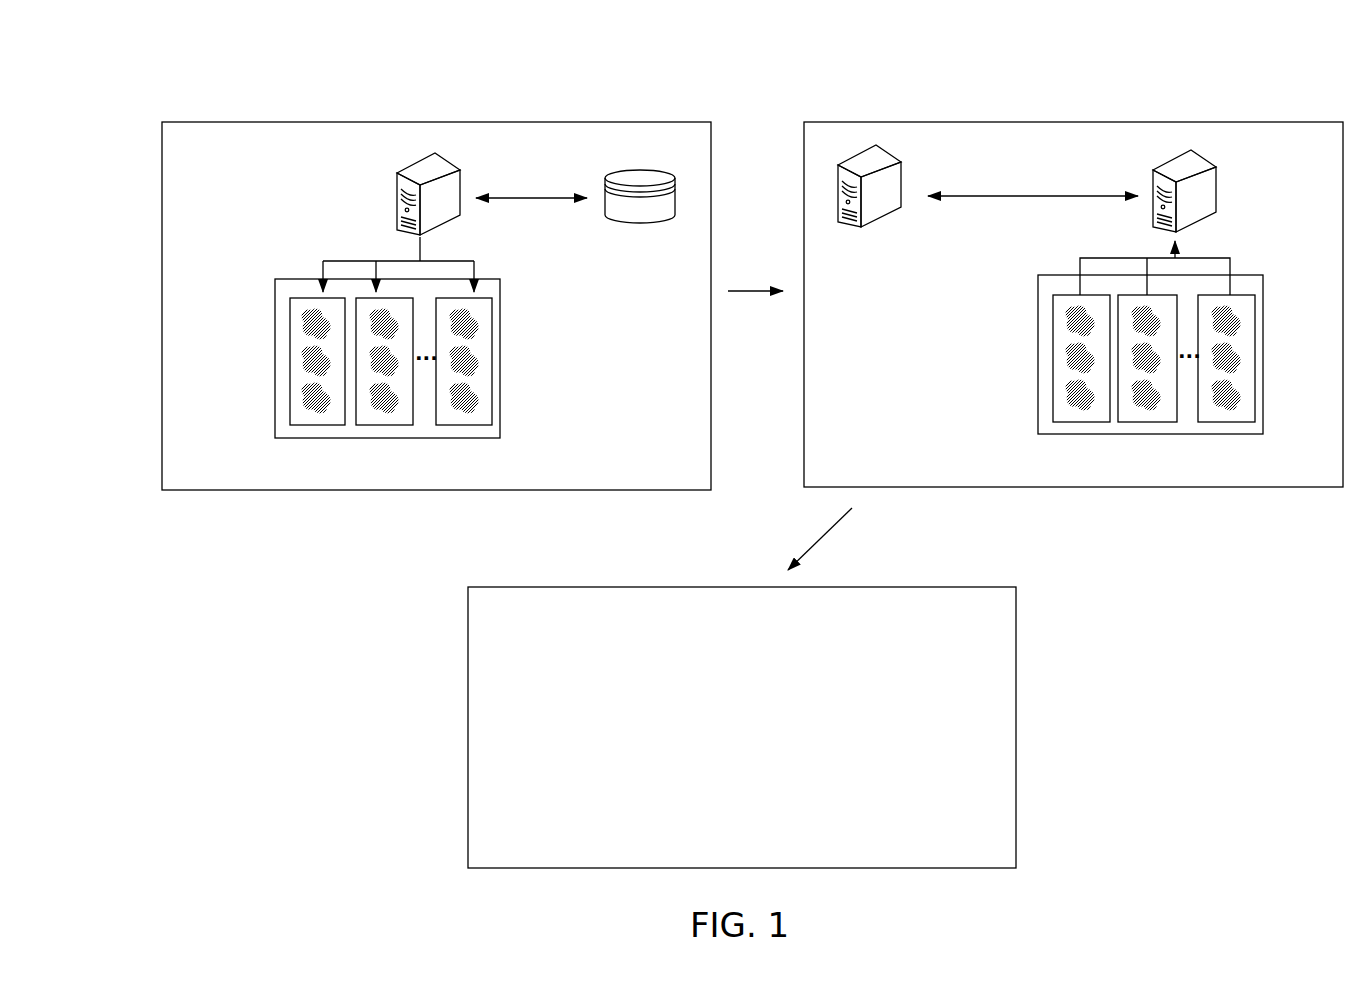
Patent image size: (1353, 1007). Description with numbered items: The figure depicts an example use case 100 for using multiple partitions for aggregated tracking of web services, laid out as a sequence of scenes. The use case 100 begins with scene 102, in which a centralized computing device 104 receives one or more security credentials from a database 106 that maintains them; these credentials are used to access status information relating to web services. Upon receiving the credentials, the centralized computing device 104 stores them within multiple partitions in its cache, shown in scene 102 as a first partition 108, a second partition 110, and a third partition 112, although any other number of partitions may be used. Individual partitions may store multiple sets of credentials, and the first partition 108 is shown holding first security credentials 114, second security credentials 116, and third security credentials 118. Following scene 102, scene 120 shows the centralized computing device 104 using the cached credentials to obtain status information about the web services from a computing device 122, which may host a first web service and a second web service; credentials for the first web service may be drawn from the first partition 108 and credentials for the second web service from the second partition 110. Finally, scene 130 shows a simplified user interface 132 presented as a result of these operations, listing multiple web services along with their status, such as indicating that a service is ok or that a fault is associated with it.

The use case 100 is at (245, 50).
The scene 102 is at (250, 121).
The centralized computing device 104 is at (397, 187).
The database 106 is at (612, 172).
The first partition 108 is at (290, 296).
The second partition 110 is at (378, 428).
The third partition 112 is at (497, 310).
The first security credentials 114 is at (300, 330).
The second security credentials 116 is at (298, 365).
The third security credentials 118 is at (300, 403).
The scene 120 is at (895, 121).
The computing device 122 is at (900, 168).
The scene 130 is at (562, 585).
The user interface 132 is at (512, 772).